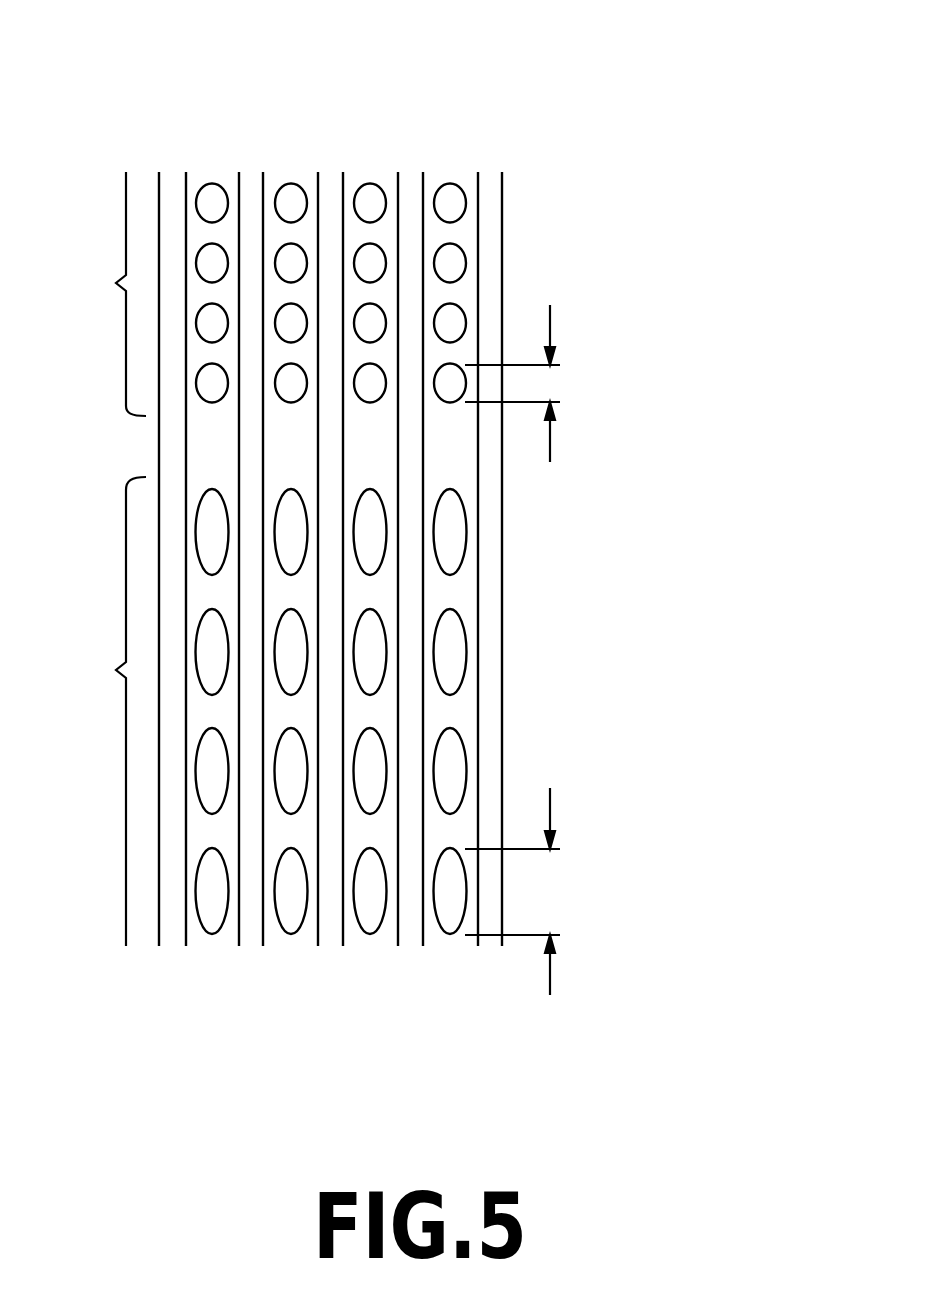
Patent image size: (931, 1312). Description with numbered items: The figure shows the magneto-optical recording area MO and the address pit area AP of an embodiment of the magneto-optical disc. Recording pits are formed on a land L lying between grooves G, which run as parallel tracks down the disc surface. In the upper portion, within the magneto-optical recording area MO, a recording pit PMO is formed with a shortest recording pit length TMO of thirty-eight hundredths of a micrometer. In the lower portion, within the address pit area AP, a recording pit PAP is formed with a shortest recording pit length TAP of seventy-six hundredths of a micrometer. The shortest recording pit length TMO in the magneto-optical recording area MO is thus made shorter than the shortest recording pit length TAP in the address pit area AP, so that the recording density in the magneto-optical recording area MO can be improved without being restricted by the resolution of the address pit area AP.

The groove G is at (175, 177).
The land L is at (211, 175).
The magneto-optical recording area MO is at (94, 294).
The address pit area AP is at (94, 711).
The recording pit PMO is at (455, 262).
The recording pit PAP is at (453, 642).
The shortest recording pit length TMO is at (641, 383).
The shortest recording pit length TAP is at (628, 891).